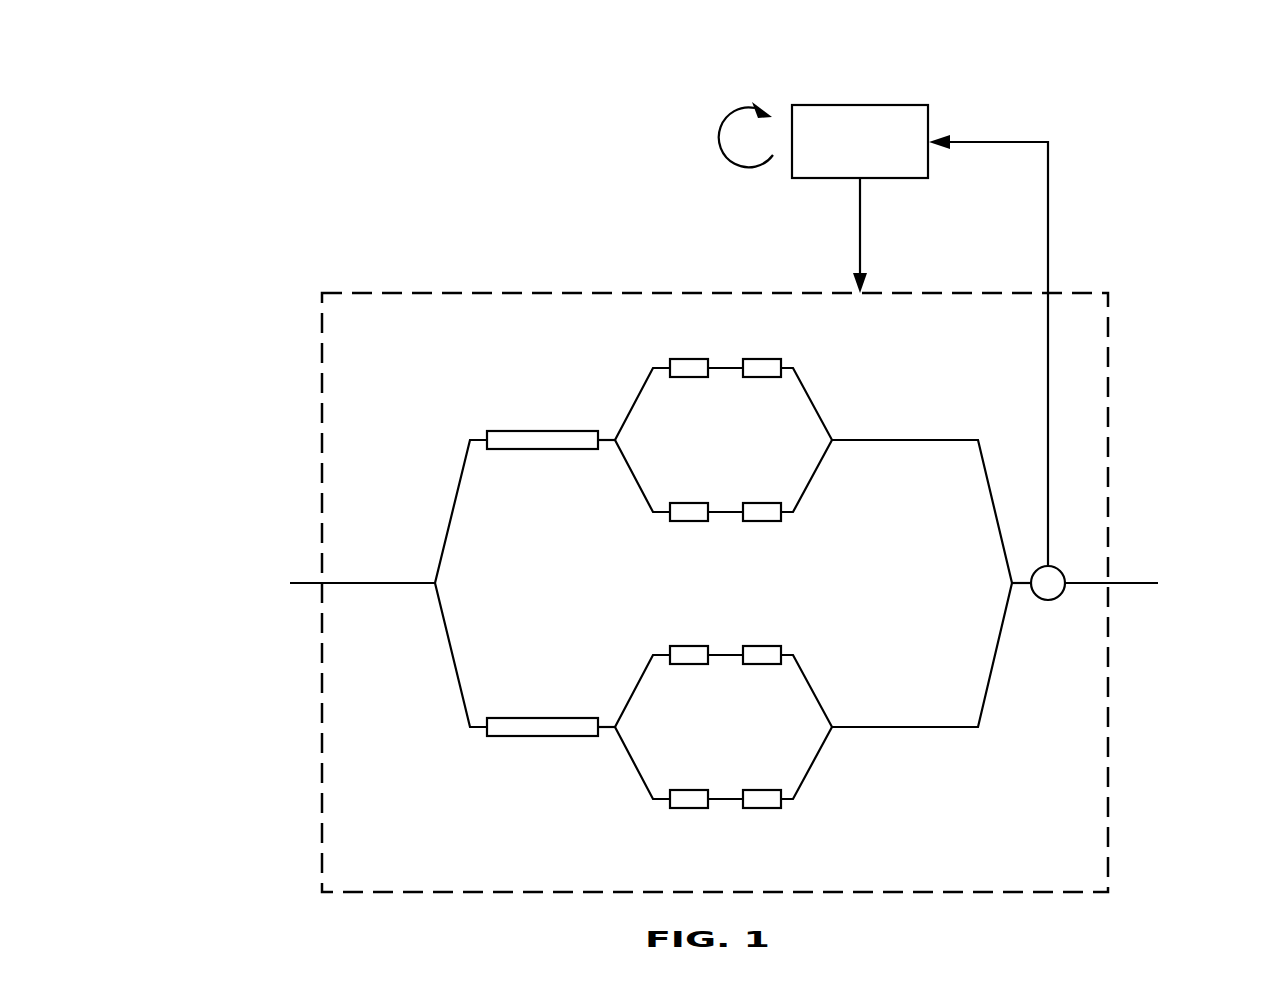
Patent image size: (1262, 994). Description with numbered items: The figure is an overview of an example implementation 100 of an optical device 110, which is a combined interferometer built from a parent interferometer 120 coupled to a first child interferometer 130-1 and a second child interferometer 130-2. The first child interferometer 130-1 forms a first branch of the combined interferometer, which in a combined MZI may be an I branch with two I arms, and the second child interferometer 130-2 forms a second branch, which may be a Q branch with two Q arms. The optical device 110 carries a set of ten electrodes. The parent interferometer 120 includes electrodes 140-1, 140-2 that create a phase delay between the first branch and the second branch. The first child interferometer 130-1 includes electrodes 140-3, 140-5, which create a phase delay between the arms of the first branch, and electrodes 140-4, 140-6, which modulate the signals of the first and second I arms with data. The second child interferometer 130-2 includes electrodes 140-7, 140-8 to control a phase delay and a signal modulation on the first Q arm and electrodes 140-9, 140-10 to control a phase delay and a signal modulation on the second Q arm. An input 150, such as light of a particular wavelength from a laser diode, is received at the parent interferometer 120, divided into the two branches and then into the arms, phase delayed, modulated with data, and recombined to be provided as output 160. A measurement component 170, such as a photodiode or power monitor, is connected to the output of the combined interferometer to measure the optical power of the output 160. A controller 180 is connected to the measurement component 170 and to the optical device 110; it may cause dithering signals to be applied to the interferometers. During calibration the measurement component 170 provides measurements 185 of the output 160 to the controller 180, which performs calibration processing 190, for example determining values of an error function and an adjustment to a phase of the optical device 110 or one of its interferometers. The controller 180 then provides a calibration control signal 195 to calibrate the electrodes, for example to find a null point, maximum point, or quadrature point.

The example implementation 100 is at (209, 47).
The optical device 110 is at (308, 282).
The parent interferometer 120 is at (545, 624).
The first child interferometer 130-1 is at (757, 479).
The second child interferometer 130-2 is at (753, 767).
The electrode 140-1 is at (487, 432).
The electrode 140-2 is at (487, 737).
The electrode 140-3 is at (700, 334).
The electrode 140-4 is at (810, 334).
The electrode 140-5 is at (695, 567).
The electrode 140-6 is at (822, 567).
The electrode 140-7 is at (692, 622).
The electrode 140-8 is at (822, 622).
The electrode 140-9 is at (692, 857).
The electrode 140-10 is at (825, 857).
The input 150 is at (253, 567).
The output 160 is at (1087, 567).
The measurement component 170 is at (1048, 600).
The controller 180 is at (860, 141).
The measurements 185 is at (1076, 350).
The calibration processing 190 is at (664, 135).
The calibration control signal 195 is at (935, 235).